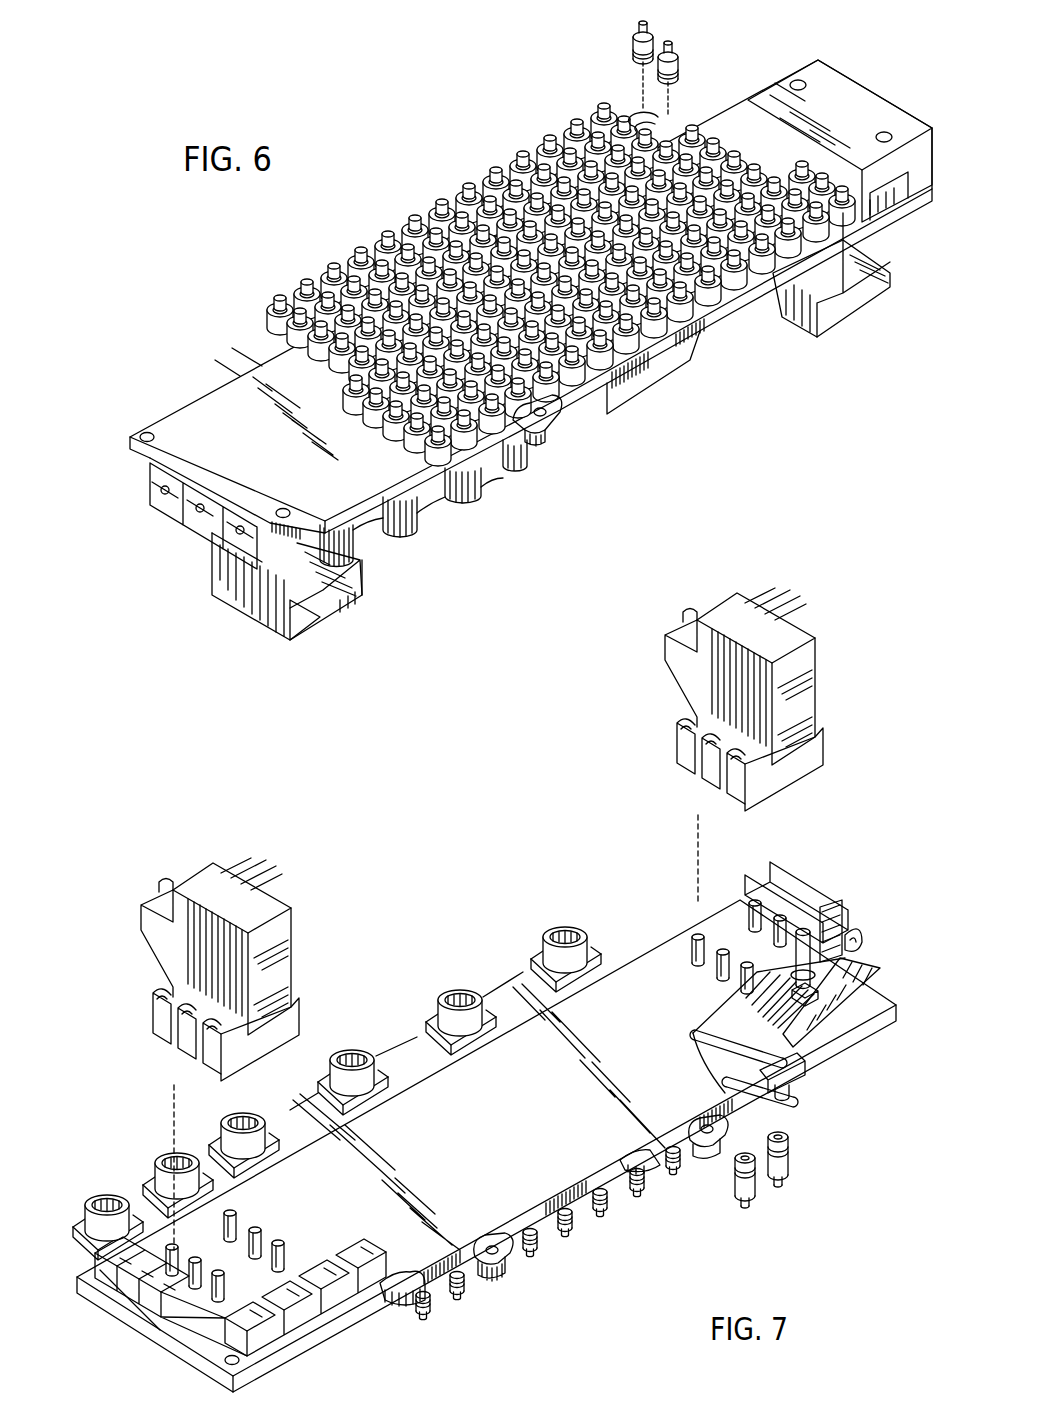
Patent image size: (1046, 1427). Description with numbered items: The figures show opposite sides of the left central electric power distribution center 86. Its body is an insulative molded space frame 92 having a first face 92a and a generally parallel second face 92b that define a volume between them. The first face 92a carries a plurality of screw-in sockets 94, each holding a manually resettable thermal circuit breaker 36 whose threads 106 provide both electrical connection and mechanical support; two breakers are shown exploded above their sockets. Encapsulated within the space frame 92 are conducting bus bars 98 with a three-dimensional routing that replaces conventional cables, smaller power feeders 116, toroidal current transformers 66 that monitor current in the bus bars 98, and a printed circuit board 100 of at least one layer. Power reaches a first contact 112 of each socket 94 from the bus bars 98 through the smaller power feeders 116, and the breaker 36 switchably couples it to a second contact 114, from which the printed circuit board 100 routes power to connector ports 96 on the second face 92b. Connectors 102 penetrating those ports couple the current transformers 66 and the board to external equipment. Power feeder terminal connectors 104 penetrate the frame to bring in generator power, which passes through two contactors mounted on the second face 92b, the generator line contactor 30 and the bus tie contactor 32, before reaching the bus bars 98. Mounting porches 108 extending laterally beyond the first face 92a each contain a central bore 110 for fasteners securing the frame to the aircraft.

In FIG. 6, the generator line contactor 30 is at (868, 250).
In FIG. 7, the generator line contactor 30 is at (773, 618).
In FIG. 6, the bus tie contactor 32 is at (265, 632).
In FIG. 7, the bus tie contactor 32 is at (268, 896).
In FIG. 6, the thermal circuit breaker 36 is at (632, 32).
In FIG. 7, the thermal circuit breaker 36 is at (778, 1187).
In FIG. 7, the current transformer 66 is at (820, 993).
In FIG. 6, the power distribution center 86 is at (448, 182).
In FIG. 7, the power distribution center 86 is at (617, 1235).
In FIG. 6, the molded space frame 92 is at (690, 336).
In FIG. 7, the molded space frame 92 is at (520, 1235).
In FIG. 6, the first face 92a is at (462, 450).
In FIG. 6, the second face 92b is at (520, 445).
In FIG. 7, the second face 92b is at (447, 1305).
In FIG. 6, the screw-in socket 94 is at (648, 110).
In FIG. 7, the connector port 96 is at (372, 1052).
In FIG. 7, the conducting bus bar 98 is at (710, 1015).
In FIG. 7, the printed circuit board 100 is at (797, 1072).
In FIG. 7, the connector 102 is at (575, 927).
In FIG. 6, the power feeder terminal connector 104 is at (240, 532).
In FIG. 7, the power feeder terminal connector 104 is at (85, 1290).
In FIG. 6, the threads 106 is at (683, 70).
In FIG. 7, the threads 106 is at (735, 1160).
In FIG. 6, the mounting porch 108 is at (545, 432).
In FIG. 7, the mounting porch 108 is at (490, 1266).
In FIG. 6, the bore 110 is at (563, 405).
In FIG. 7, the first contact 112 is at (787, 1040).
In FIG. 7, the second contact 114 is at (787, 1090).
In FIG. 7, the smaller power feeder 116 is at (787, 1037).